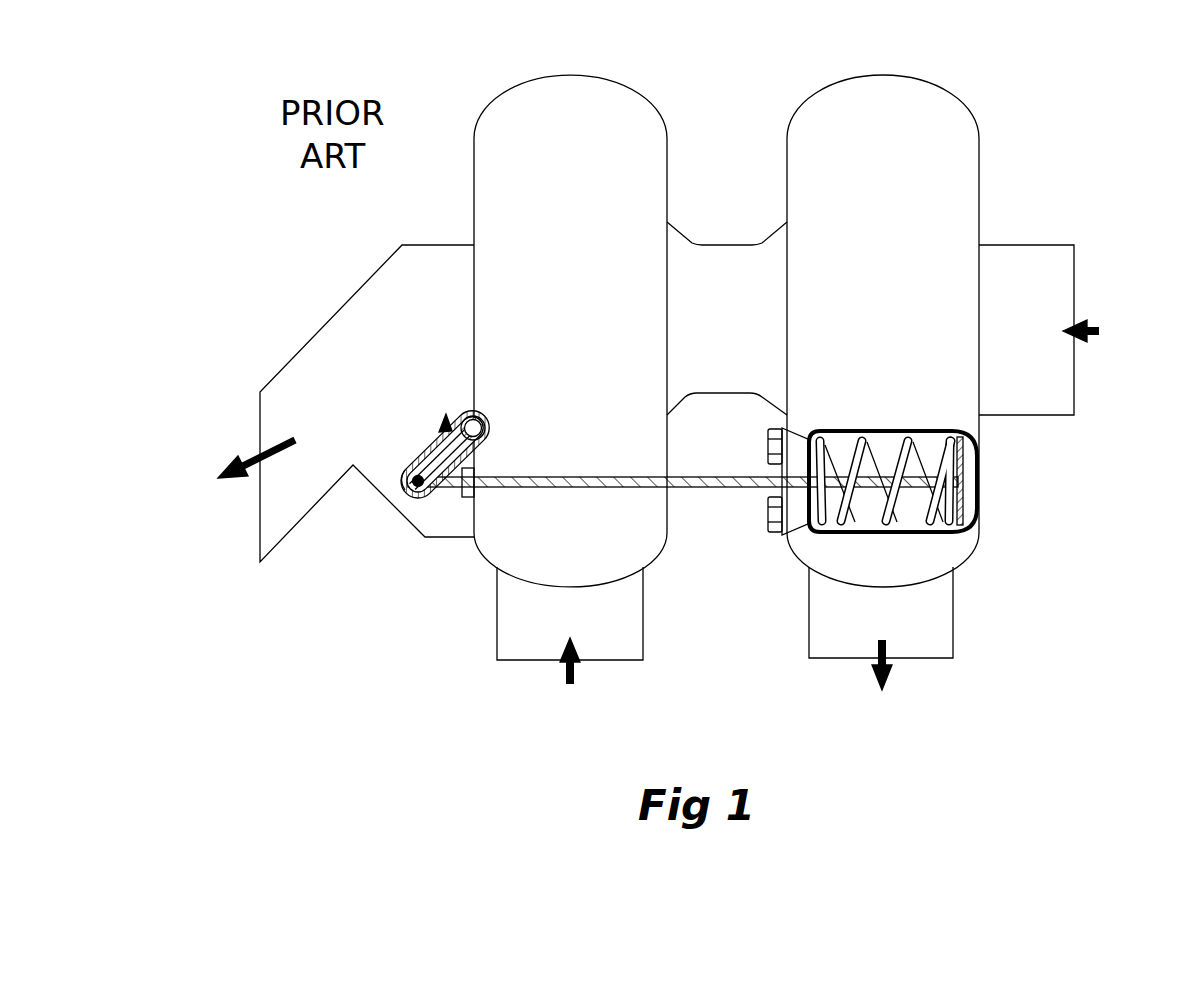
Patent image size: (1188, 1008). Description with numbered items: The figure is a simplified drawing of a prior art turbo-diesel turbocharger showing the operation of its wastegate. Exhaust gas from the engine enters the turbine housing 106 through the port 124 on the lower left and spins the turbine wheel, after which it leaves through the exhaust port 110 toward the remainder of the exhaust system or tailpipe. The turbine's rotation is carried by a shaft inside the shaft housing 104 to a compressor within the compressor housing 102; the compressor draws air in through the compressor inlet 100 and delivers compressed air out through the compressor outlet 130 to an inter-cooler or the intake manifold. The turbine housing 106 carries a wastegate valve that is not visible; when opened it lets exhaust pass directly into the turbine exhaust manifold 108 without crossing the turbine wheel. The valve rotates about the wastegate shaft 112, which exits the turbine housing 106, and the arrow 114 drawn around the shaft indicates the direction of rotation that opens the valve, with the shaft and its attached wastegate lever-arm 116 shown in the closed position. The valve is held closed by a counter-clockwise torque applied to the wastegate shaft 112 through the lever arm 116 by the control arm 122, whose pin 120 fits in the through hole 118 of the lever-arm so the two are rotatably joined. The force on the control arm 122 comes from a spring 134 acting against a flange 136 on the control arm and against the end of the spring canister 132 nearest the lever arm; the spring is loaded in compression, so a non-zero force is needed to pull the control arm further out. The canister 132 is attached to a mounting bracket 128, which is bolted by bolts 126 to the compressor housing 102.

The compressor inlet 100 is at (1076, 282).
The compressor housing 102 is at (934, 88).
The shaft housing 104 is at (722, 246).
The turbine housing 106 is at (581, 80).
The turbine exhaust manifold 108 is at (366, 289).
The exhaust port 110 is at (258, 426).
The wastegate shaft 112 is at (487, 428).
The direction of movement arrow 114 is at (460, 418).
The wastegate lever-arm 116 is at (433, 437).
The through hole 118 is at (410, 470).
The pin 120 is at (412, 490).
The control arm 122 is at (583, 477).
The port 124 is at (540, 660).
The bolts 126 is at (768, 448).
The mounting bracket 128 is at (796, 518).
The compressor outlet 130 is at (832, 660).
The spring canister 132 is at (846, 431).
The spring 134 is at (870, 453).
The flange 136 is at (965, 460).